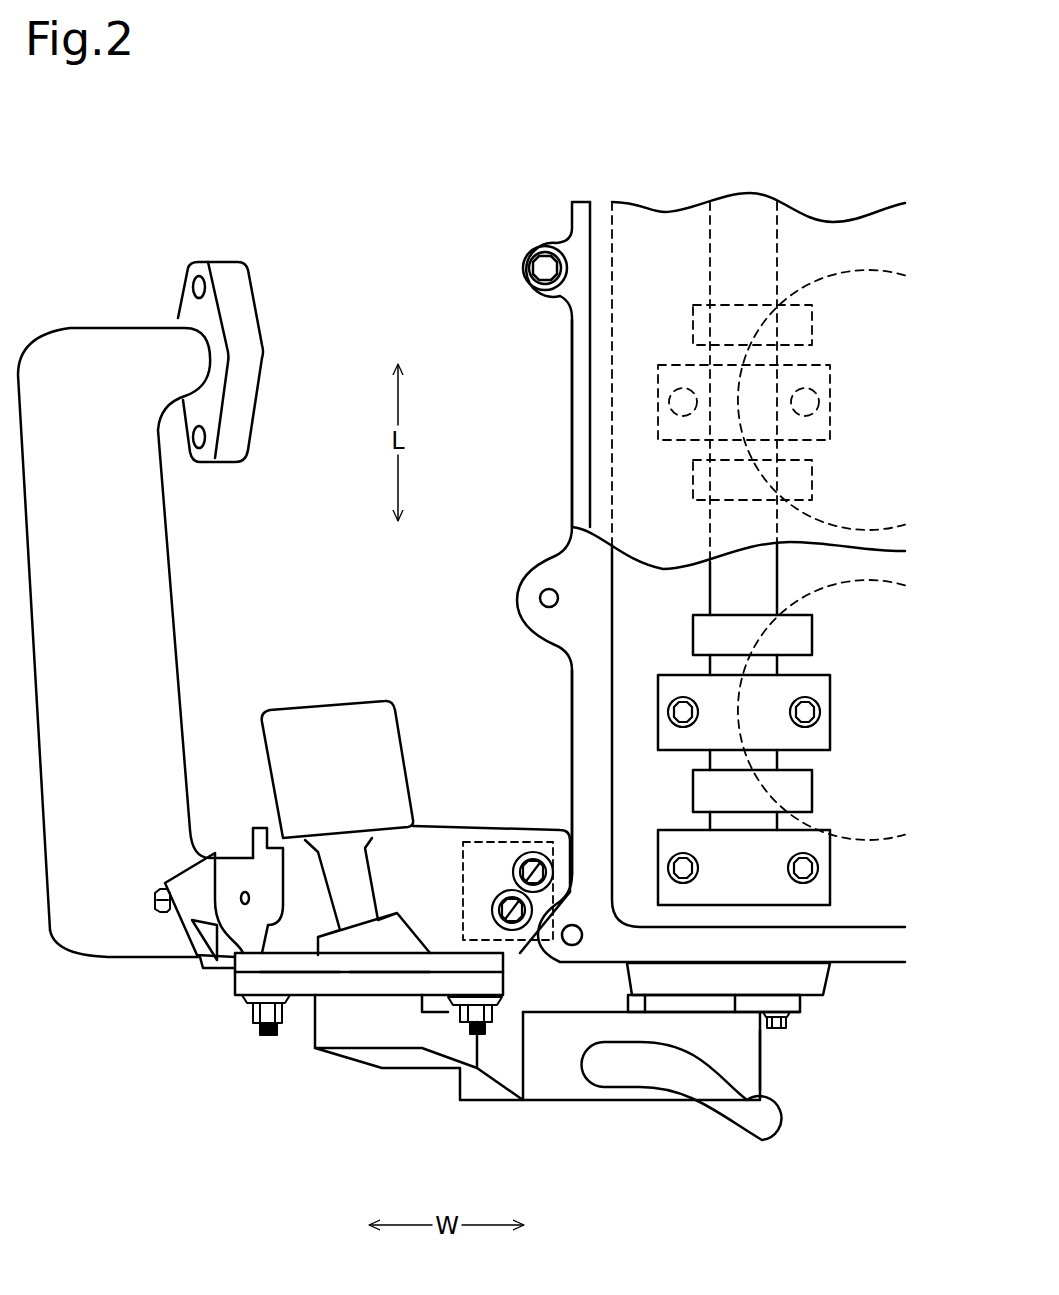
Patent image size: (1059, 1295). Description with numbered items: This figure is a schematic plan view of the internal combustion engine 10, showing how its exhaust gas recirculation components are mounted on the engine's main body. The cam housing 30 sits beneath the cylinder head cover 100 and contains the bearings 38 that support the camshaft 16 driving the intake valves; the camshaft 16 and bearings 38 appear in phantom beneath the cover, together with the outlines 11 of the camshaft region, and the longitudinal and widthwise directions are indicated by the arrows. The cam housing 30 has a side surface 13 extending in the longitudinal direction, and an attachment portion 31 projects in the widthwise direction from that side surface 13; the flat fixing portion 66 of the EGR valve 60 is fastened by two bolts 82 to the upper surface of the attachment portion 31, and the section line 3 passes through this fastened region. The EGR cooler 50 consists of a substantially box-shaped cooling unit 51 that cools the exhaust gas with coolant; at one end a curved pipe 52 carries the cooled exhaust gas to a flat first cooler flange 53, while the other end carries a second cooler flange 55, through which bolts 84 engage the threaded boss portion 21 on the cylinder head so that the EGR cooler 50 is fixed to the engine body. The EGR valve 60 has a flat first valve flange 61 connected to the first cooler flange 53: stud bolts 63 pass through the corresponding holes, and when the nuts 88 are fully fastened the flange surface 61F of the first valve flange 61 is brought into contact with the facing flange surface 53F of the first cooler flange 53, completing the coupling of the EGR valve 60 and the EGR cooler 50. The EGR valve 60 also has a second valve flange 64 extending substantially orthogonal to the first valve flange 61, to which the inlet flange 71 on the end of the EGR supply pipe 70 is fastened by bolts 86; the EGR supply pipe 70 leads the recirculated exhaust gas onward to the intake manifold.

The internal combustion engine 10 is at (383, 178).
The cylinder head cover 100 is at (600, 375).
The cam housing 30 is at (572, 468).
The wheel 11 is at (847, 277).
The camshaft 16 is at (730, 592).
The side surface 13 is at (572, 710).
The bearings 38 is at (808, 735).
The EGR supply pipe 70 is at (174, 600).
The EGR valve 60 is at (320, 705).
The second valve flange 64 is at (237, 860).
The bolts 86 is at (152, 898).
The inlet flange 71 is at (190, 945).
The first valve flange 61 is at (260, 963).
The flange surface 61F is at (300, 970).
The first cooler flange 53 is at (270, 990).
The stud bolts 63 is at (270, 1036).
The nuts 88 is at (283, 1013).
The flange surface 53F is at (390, 967).
The pipe 52 is at (360, 1070).
The fixing portion 66 is at (447, 843).
The attachment portion 31 is at (470, 840).
The bolts 82 is at (514, 872).
The section line 3 is at (553, 840).
The boss portion 21 is at (830, 975).
The second cooler flange 55 is at (800, 1003).
The bolts 84 is at (790, 1020).
The cooling unit 51 is at (755, 1065).
The EGR cooler 50 is at (548, 1103).